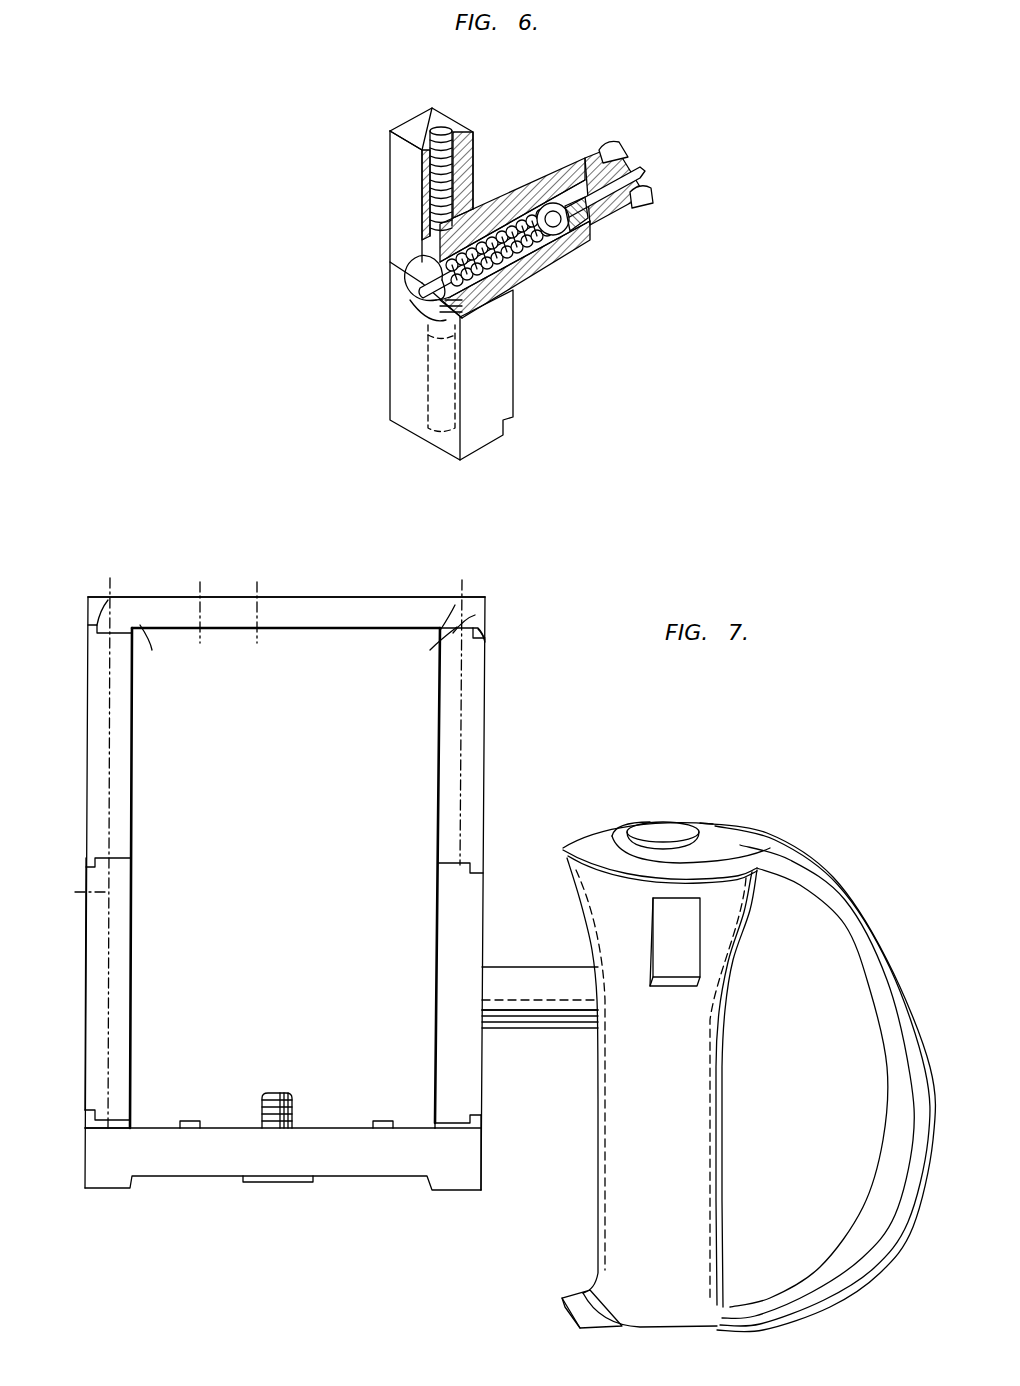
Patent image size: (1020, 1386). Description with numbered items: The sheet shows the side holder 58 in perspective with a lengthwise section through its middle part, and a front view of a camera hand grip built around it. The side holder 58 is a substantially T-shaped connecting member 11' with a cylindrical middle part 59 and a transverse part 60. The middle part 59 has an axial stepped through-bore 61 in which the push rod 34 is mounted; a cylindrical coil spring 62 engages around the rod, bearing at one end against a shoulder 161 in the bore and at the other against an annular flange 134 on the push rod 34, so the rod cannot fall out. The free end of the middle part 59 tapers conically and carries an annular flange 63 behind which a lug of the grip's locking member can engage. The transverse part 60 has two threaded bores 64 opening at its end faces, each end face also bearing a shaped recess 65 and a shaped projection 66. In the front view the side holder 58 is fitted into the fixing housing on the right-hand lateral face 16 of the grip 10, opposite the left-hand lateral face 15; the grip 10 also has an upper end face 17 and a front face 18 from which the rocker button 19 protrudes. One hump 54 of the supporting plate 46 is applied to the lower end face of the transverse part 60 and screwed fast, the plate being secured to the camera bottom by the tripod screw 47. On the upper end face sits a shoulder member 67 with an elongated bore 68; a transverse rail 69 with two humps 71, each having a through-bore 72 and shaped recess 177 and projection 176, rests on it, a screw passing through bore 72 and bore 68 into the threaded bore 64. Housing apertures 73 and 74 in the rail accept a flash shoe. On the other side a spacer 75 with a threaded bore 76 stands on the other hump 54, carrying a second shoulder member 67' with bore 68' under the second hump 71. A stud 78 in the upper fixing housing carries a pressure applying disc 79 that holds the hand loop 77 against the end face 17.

In FIG. 7, the grip 10 is at (740, 1054).
In FIG. 7, the connecting member 11' is at (540, 1039).
In FIG. 7, the lateral face 15 is at (725, 1057).
In FIG. 7, the lateral face 16 is at (598, 1078).
In FIG. 7, the upper end face 17 is at (592, 847).
In FIG. 7, the front face 18 is at (640, 1203).
In FIG. 7, the rocker button 19 is at (688, 938).
In FIG. 6, the push rod 34 is at (420, 287).
In FIG. 7, the supporting plate 46 is at (211, 1178).
In FIG. 7, the tripod screw 47 is at (287, 1100).
In FIG. 7, the hump 54 is at (92, 1138).
In FIG. 6, the side holder 58 is at (536, 211).
In FIG. 7, the side holder 58 is at (428, 984).
In FIG. 6, the middle part 59 is at (531, 288).
In FIG. 7, the middle part 59 is at (544, 980).
In FIG. 6, the transverse part 60 is at (408, 415).
In FIG. 7, the transverse part 60 is at (445, 893).
In FIG. 6, the through-bore 61 is at (540, 255).
In FIG. 6, the coil spring 62 is at (505, 213).
In FIG. 6, the annular flange 63 is at (608, 145).
In FIG. 6, the threaded bore 64 is at (440, 197).
In FIG. 6, the shaped recess 65 is at (471, 130).
In FIG. 6, the shaped projection 66 is at (412, 122).
In FIG. 7, the shoulder member 67 is at (486, 875).
In FIG. 7, the shoulder member 67' is at (83, 872).
In FIG. 7, the elongated bore 68 is at (500, 722).
In FIG. 7, the longitudinal bore 68' is at (77, 853).
In FIG. 7, the transverse rail 69 is at (360, 614).
In FIG. 7, the hump 71 is at (98, 620).
In FIG. 7, the through-bore 72 is at (440, 630).
In FIG. 7, the housing aperture 73 is at (257, 640).
In FIG. 7, the housing aperture 74 is at (201, 640).
In FIG. 7, the spacer 75 is at (91, 965).
In FIG. 7, the threaded bore 76 is at (75, 892).
In FIG. 7, the hand loop 77 is at (922, 1030).
In FIG. 7, the stud 78 is at (694, 826).
In FIG. 7, the pressure applying disc 79 is at (664, 829).
In FIG. 6, the annular flange 134 is at (588, 246).
In FIG. 6, the shoulder 161 is at (437, 300).
In FIG. 7, the shaped projection 176 is at (460, 632).
In FIG. 7, the shaped recess 177 is at (487, 643).